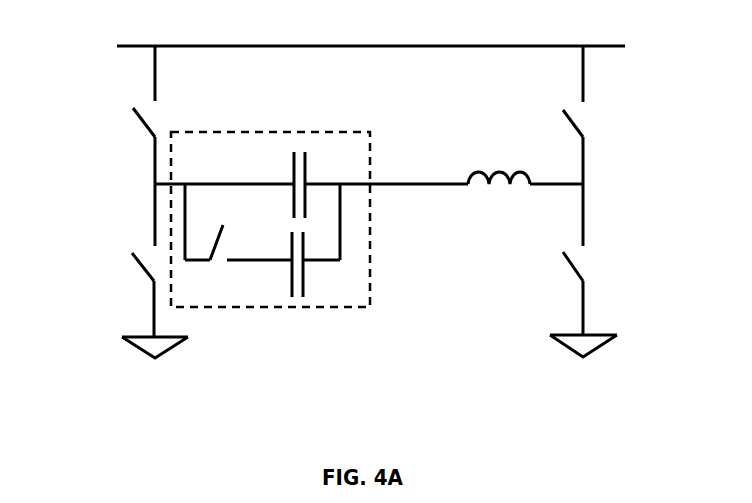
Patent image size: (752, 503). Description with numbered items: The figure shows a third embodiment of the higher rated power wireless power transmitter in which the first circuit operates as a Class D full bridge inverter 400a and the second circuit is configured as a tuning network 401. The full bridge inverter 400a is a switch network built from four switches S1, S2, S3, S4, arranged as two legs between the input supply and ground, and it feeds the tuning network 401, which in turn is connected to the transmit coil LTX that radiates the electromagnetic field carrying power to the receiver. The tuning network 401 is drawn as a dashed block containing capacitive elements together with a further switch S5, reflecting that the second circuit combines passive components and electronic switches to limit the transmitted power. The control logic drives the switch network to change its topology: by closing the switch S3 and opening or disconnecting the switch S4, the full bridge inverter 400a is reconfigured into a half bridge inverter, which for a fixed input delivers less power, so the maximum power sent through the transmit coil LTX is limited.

The full bridge inverter 400a is at (369, 194).
The tuning network 401 is at (294, 185).
The switch S1 is at (115, 91).
The switch S2 is at (117, 263).
The switch S3 is at (594, 263).
The switch S4 is at (599, 91).
The switch S5 is at (235, 242).
The transmit coil LTX is at (499, 203).